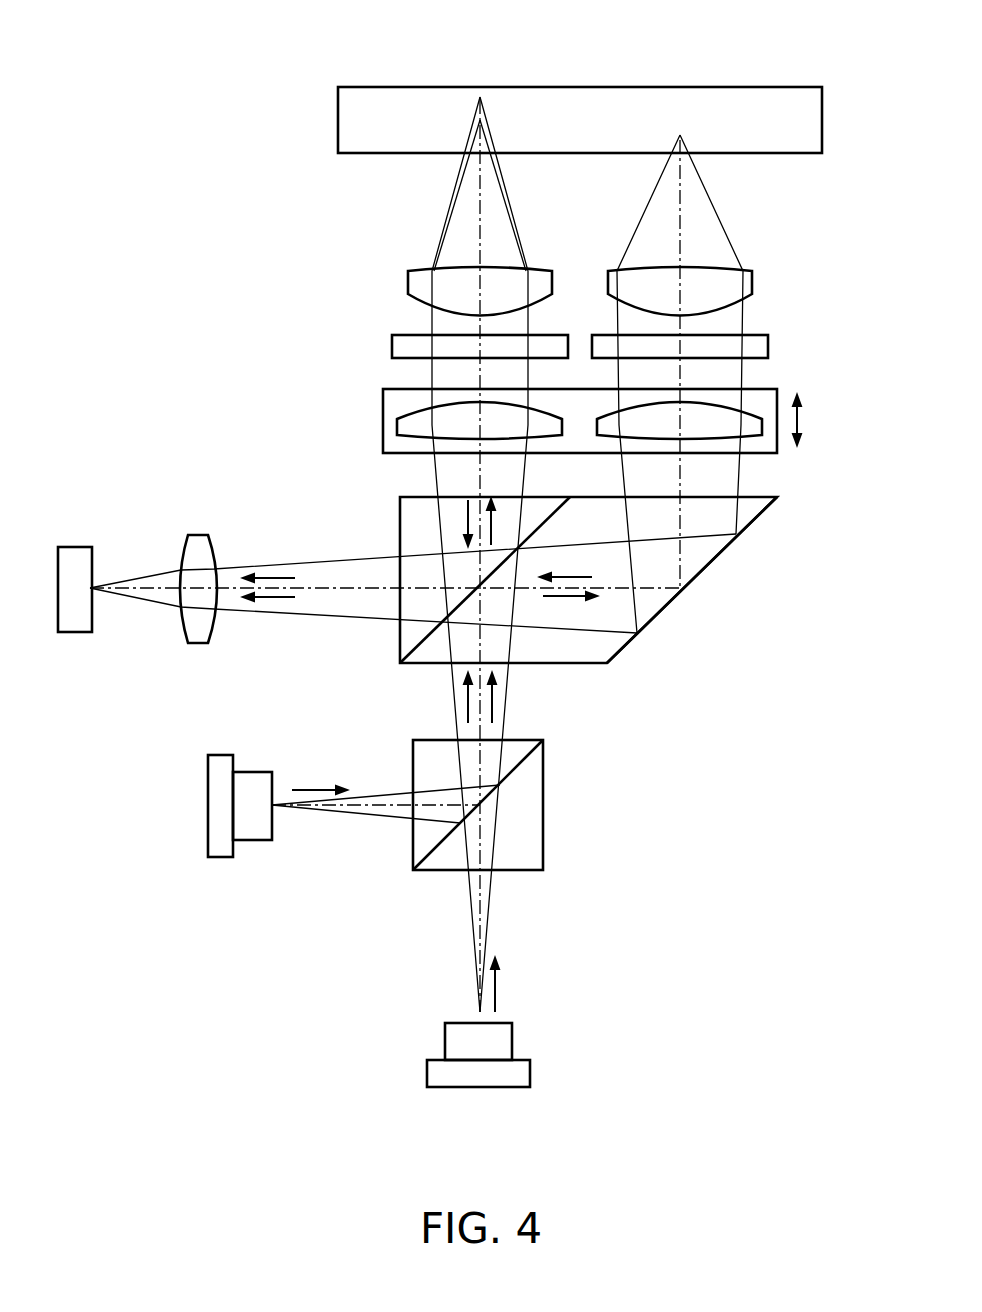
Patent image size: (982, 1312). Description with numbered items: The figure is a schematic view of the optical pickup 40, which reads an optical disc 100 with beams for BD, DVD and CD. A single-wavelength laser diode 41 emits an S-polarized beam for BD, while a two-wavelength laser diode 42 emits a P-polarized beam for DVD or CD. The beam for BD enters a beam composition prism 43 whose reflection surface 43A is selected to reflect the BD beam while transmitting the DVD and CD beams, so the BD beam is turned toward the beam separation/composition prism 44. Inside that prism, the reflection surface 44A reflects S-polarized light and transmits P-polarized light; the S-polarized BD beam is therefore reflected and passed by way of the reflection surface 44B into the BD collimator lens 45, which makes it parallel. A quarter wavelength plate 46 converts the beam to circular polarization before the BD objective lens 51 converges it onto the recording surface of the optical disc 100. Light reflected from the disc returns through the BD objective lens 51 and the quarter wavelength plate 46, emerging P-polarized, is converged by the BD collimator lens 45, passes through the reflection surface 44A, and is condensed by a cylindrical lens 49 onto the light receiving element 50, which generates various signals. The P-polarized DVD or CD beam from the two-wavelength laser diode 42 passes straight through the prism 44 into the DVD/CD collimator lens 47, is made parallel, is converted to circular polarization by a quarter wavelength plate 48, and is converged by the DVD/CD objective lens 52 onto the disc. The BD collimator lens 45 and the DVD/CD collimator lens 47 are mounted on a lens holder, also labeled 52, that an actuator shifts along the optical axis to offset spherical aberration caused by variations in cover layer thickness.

The optical disc 100 is at (363, 87).
The optical pickup 40 is at (788, 1098).
The single-wavelength laser diode 41 is at (208, 805).
The two-wavelength laser diode 42 is at (427, 1075).
The beam composition prism 43 is at (588, 863).
The reflection surface 43A is at (422, 858).
The beam separation/composition prism 44 is at (722, 614).
The reflection surface 44A is at (400, 643).
The reflection surface 44B is at (619, 653).
The BD collimator lens 45 is at (772, 417).
The quarter wavelength plate 46 is at (768, 341).
The DVD/CD collimator lens 47 is at (397, 418).
The quarter wavelength plate 48 is at (392, 341).
The cylindrical lens 49 is at (200, 535).
The light receiving element 50 is at (75, 547).
The BD objective lens 51 is at (753, 281).
The DVD/CD objective lens 52 is at (408, 282).